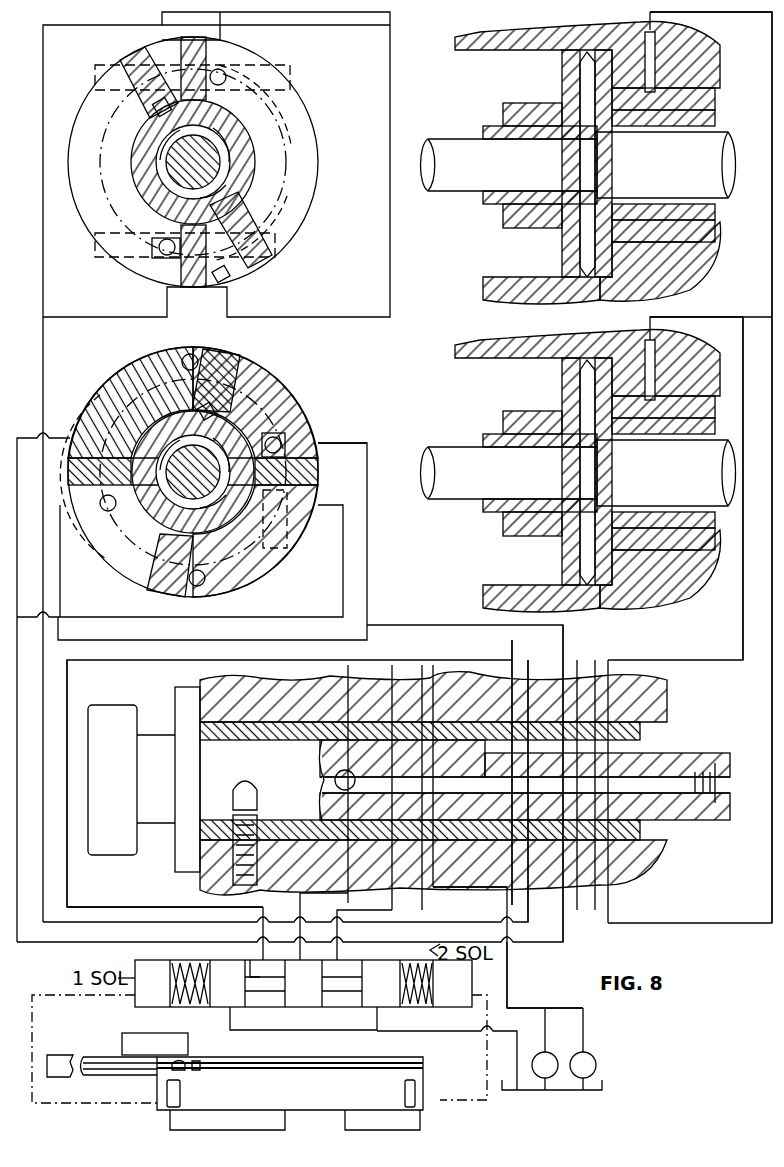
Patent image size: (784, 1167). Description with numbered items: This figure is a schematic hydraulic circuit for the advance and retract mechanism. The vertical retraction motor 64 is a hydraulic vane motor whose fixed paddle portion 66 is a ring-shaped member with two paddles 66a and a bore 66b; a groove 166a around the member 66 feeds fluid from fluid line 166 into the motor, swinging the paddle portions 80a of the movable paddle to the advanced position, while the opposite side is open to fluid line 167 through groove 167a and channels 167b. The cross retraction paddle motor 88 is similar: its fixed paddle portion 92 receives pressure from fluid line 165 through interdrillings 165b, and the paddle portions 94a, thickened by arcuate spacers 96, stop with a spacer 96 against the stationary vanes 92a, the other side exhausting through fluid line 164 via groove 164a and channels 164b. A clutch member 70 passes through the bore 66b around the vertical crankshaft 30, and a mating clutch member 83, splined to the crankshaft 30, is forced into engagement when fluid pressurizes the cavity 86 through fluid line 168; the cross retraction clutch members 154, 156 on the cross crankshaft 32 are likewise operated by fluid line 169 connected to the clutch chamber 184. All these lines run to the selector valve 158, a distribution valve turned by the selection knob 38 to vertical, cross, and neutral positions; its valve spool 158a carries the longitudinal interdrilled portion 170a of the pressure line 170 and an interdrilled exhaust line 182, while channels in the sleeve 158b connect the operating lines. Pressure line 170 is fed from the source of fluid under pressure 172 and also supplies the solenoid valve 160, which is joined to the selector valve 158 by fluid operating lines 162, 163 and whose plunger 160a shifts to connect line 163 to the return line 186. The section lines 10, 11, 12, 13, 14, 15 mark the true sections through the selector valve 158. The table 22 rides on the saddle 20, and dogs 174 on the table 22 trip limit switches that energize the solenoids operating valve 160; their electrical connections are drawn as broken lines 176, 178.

The vertical retraction motor 64 is at (218, 171).
The fixed paddle portion 66 is at (96, 240).
The paddles 66a is at (175, 275).
The bore 66b is at (295, 73).
The paddle portions 80a is at (262, 276).
The fluid line 166 is at (112, 35).
The groove 166a is at (240, 55).
The fluid line 167 is at (322, 28).
The groove 167a is at (242, 285).
The channels 167b is at (160, 44).
The paddle motor 88 is at (209, 489).
The spacers 96 is at (182, 467).
The fixed paddle portion 92 is at (274, 590).
The stationary vanes 92a is at (285, 440).
The paddle portions 94a is at (176, 590).
The fluid line 164 is at (88, 400).
The groove 164a is at (292, 548).
The channels 164b is at (114, 374).
The fluid line 165 is at (376, 438).
The interdrillings 165b is at (295, 430).
The vertical crankshaft 30 is at (578, 162).
The clutch member 70 is at (542, 103).
The mating clutch member 83 is at (602, 165).
The cavity 86 is at (660, 83).
The fluid line 168 is at (772, 40).
The fluid line 169 is at (735, 315).
The cross crankshaft 32 is at (578, 470).
The clutch member 154 is at (532, 458).
The clutch member 156 is at (567, 473).
The clutch chamber 184 is at (674, 371).
The selection knob 38 is at (144, 779).
The selector valve 158 is at (465, 780).
The valve spool 158a is at (242, 780).
The sleeve 158b is at (287, 720).
The interdrilled portion 170a is at (320, 795).
The exhaust line 182 is at (672, 828).
The fluid operating line 162 is at (155, 928).
The fluid operating line 163 is at (437, 897).
The section line 10 is at (357, 862).
The section line 11 is at (442, 862).
The section line 12 is at (535, 904).
The section line 13 is at (585, 914).
The section line 14 is at (617, 874).
The section line 15 is at (399, 887).
The solenoid valve 160 is at (303, 997).
The plunger 160a is at (248, 962).
The return line 186 is at (340, 1033).
The pressure line 170 is at (507, 977).
The source of fluid under pressure 172 is at (568, 1044).
The broken line 176 is at (32, 1020).
The broken line 178 is at (485, 1045).
The table 22 is at (115, 1082).
The dogs 174 is at (195, 1060).
The saddle 20 is at (184, 1093).